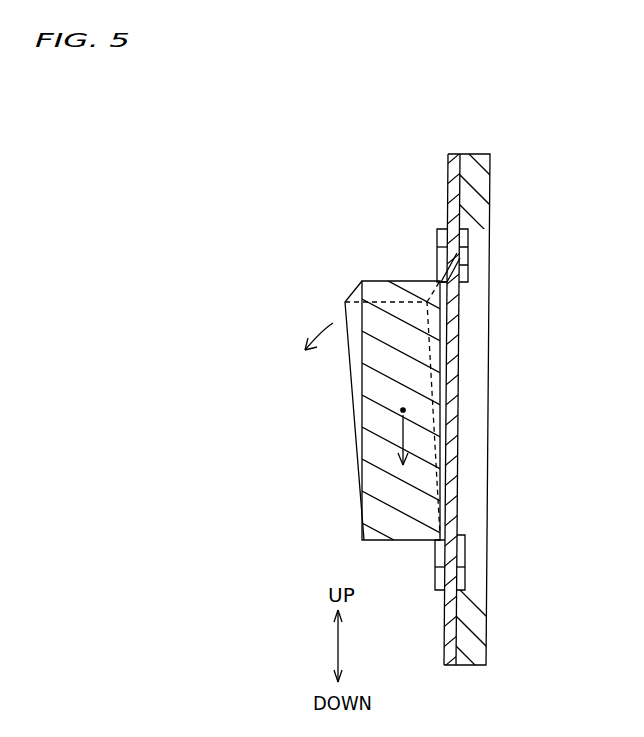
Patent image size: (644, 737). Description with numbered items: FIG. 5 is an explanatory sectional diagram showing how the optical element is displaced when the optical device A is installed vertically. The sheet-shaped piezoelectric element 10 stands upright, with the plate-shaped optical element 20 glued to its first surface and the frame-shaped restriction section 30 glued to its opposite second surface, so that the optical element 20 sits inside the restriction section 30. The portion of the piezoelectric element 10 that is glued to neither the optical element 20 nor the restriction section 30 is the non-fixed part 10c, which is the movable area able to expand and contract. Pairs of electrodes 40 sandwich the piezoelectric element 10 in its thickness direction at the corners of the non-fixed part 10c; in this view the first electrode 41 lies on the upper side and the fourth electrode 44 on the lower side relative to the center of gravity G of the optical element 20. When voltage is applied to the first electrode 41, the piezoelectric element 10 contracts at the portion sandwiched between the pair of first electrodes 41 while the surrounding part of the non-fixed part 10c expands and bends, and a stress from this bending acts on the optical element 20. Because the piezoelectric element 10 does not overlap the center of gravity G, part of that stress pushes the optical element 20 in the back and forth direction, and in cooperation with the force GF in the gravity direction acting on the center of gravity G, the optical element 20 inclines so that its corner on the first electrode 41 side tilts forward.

The piezoelectric element 10 is at (447, 178).
The non-fixed part 10c is at (467, 266).
The optical element 20 is at (361, 496).
The restriction section 30 is at (490, 187).
The electrodes 40 is at (508, 412).
The first electrode 41 is at (468, 240).
The fourth electrode 44 is at (465, 577).
The optical device A is at (499, 126).
The center of gravity G is at (401, 410).
The force in a gravity force direction GF is at (407, 456).